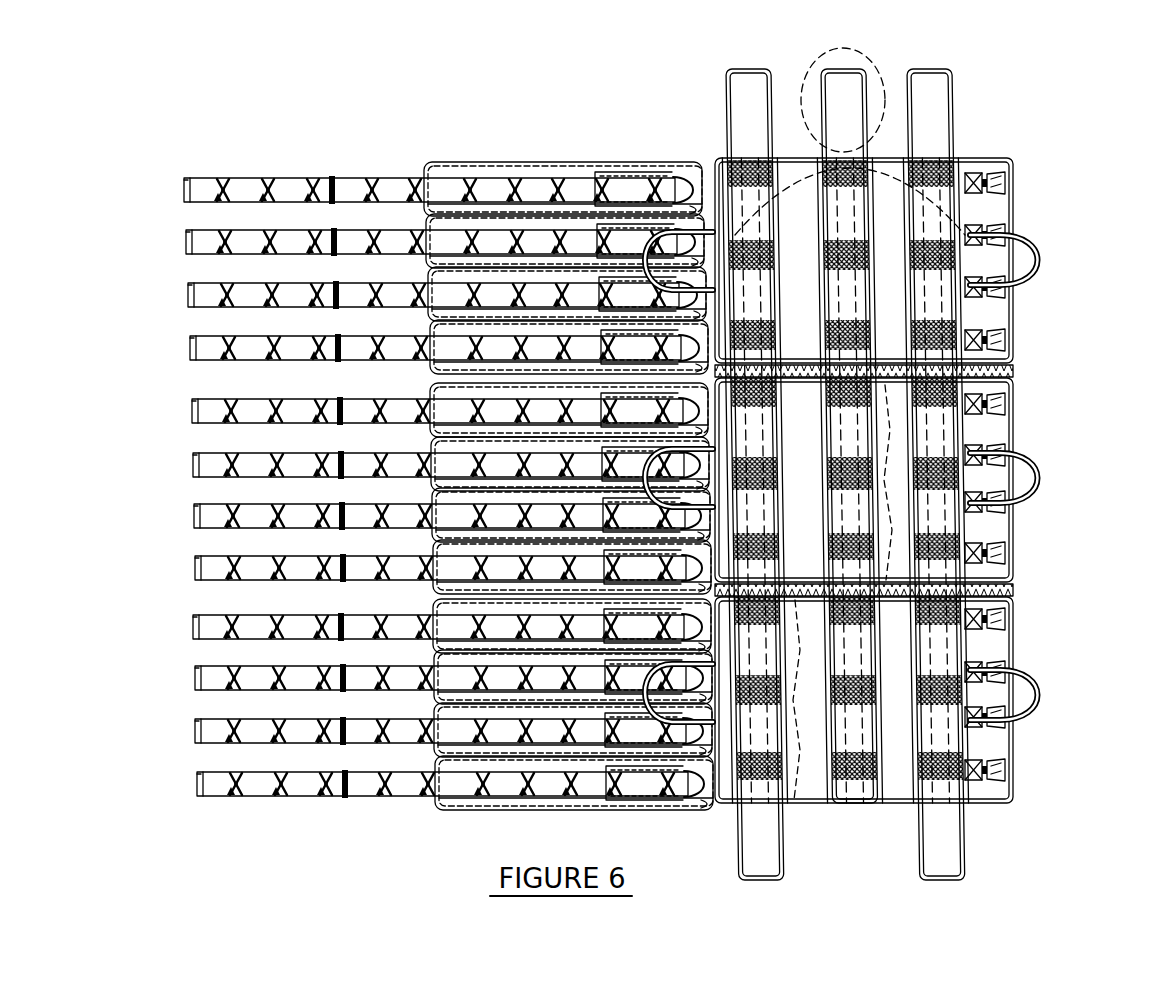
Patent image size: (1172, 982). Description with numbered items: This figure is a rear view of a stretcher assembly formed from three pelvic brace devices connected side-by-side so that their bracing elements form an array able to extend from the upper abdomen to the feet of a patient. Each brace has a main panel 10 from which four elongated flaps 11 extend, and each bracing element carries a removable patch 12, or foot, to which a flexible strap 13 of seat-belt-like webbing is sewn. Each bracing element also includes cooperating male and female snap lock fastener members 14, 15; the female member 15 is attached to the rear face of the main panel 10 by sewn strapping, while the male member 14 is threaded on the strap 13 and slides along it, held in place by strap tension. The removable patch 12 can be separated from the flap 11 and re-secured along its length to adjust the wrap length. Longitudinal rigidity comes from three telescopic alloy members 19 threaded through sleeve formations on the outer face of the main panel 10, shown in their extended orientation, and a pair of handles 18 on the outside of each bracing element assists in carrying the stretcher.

The main panel 10 is at (1048, 308).
The elongated flap 11 is at (468, 163).
The removable patch 12 is at (632, 164).
The flexible strap 13 is at (249, 190).
The male snap lock fastener member 14 is at (331, 178).
The female snap lock fastener member 15 is at (1008, 182).
The handle 18 is at (735, 230).
The alloy member 19 is at (760, 70).